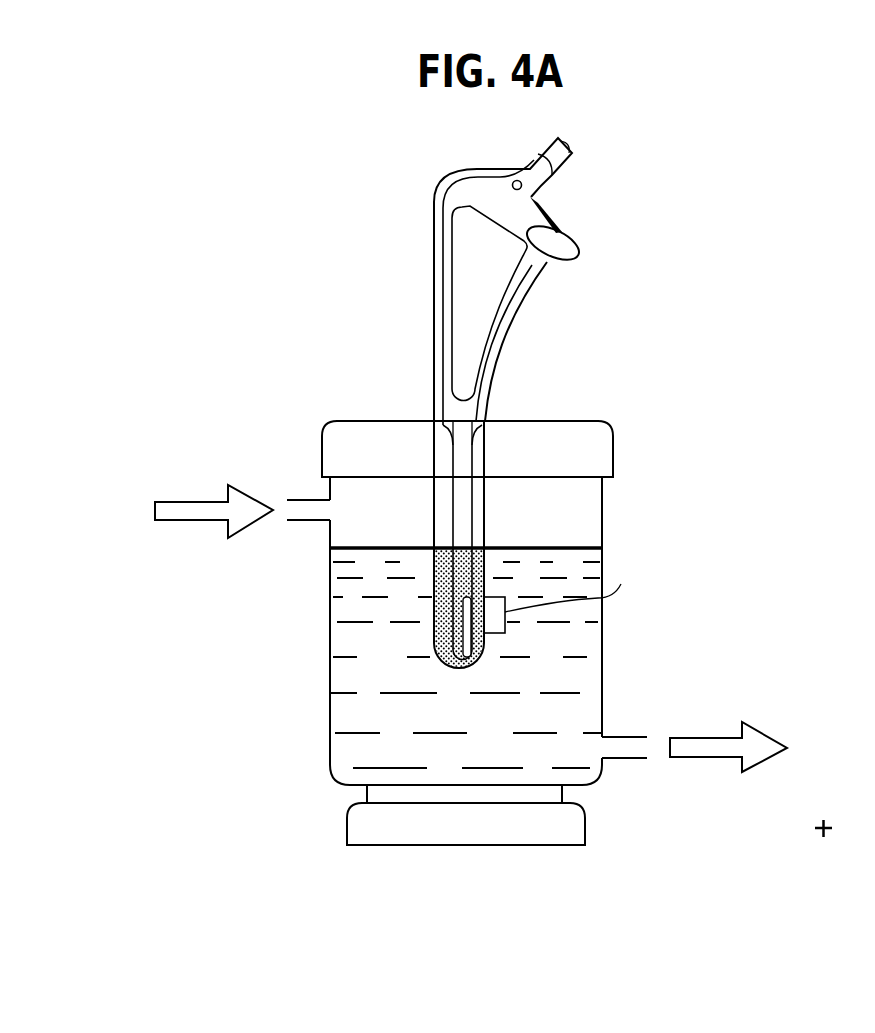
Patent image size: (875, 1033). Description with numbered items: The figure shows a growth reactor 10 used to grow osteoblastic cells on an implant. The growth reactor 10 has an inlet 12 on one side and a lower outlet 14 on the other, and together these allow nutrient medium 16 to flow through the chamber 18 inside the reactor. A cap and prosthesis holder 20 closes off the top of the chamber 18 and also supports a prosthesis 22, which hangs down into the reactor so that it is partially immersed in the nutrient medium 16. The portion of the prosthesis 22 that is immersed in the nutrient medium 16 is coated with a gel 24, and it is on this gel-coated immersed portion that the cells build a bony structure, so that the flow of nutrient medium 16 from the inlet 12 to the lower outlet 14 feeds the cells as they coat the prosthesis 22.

The growth reactor 10 is at (323, 660).
The inlet 12 is at (303, 525).
The lower outlet 14 is at (627, 762).
The nutrient medium 16 is at (580, 693).
The chamber 18 is at (554, 523).
The cap and prosthesis holder 20 is at (593, 441).
The prosthesis 22 is at (521, 287).
The gel 24 is at (426, 625).